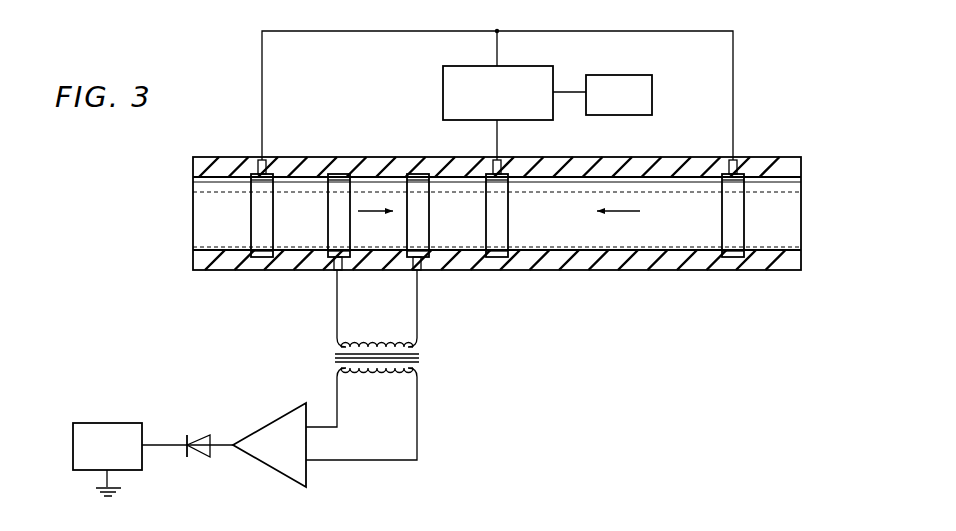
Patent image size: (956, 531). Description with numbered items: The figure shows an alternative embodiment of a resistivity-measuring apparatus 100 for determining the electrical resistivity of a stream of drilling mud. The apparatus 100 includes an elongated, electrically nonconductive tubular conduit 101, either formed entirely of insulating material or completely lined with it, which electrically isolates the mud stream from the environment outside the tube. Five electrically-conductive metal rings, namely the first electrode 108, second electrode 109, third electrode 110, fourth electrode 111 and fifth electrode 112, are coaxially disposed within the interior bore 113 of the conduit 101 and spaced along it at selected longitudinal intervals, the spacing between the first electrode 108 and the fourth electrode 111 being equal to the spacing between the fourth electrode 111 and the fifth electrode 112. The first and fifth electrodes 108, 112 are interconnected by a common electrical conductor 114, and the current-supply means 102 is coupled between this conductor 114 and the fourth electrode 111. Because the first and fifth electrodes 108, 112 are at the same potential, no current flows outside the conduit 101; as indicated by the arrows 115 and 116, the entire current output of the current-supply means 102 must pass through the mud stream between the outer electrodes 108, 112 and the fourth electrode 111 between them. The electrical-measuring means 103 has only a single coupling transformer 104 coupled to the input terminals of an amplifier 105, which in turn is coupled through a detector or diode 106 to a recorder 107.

The resistivity-measuring apparatus 100 is at (781, 77).
The tubular conduit 101 is at (779, 162).
The current-supply means 102 is at (421, 86).
The electrical-measuring means 103 is at (275, 384).
The coupling transformer 104 is at (423, 358).
The amplifier 105 is at (281, 473).
The detector or diode 106 is at (200, 459).
The recorder 107 is at (73, 449).
The first electrode 108 is at (250, 212).
The second electrode 109 is at (326, 225).
The third electrode 110 is at (421, 229).
The fourth electrode 111 is at (510, 230).
The fifth electrode 112 is at (721, 220).
The interior bore 113 is at (780, 183).
The common electrical conductor 114 is at (330, 33).
The current arrow 115 is at (376, 213).
The current arrow 116 is at (610, 213).